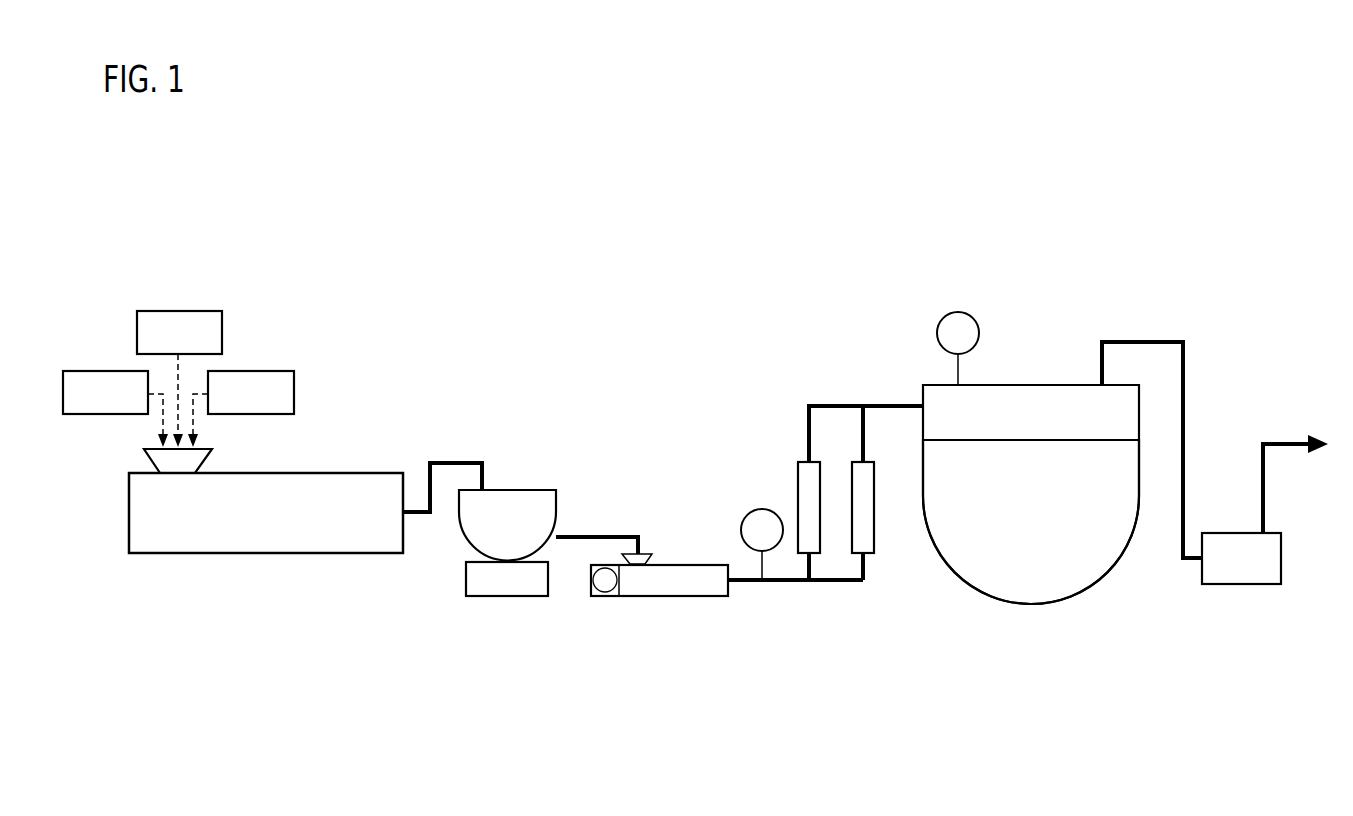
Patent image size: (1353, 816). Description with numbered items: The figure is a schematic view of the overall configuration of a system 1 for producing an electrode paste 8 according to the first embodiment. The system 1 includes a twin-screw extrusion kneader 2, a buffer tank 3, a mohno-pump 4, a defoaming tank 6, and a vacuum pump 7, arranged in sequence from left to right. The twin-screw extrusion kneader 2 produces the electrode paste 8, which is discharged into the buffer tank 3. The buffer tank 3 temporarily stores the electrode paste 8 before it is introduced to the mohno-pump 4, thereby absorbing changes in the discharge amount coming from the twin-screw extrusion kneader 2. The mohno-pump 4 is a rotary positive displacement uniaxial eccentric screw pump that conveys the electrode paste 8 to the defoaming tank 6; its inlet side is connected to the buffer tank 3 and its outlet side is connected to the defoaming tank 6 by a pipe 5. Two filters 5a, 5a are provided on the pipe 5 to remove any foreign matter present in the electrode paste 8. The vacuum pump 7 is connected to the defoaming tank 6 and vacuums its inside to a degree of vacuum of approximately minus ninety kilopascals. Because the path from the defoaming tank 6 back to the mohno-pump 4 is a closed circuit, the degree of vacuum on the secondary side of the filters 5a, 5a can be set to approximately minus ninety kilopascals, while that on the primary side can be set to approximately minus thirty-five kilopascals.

The system 1 is at (1032, 207).
The twin-screw extrusion kneader 2 is at (281, 583).
The buffer tank 3 is at (507, 620).
The mohno-pump 4 is at (657, 620).
The pipe 5 is at (833, 607).
The filters 5a is at (797, 485).
The defoaming tank 6 is at (1028, 619).
The vacuum pump 7 is at (1238, 620).
The electrode paste 8 is at (1082, 535).